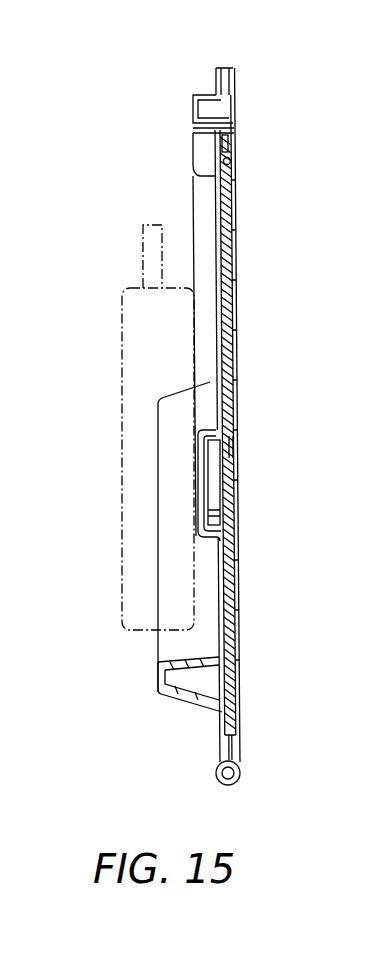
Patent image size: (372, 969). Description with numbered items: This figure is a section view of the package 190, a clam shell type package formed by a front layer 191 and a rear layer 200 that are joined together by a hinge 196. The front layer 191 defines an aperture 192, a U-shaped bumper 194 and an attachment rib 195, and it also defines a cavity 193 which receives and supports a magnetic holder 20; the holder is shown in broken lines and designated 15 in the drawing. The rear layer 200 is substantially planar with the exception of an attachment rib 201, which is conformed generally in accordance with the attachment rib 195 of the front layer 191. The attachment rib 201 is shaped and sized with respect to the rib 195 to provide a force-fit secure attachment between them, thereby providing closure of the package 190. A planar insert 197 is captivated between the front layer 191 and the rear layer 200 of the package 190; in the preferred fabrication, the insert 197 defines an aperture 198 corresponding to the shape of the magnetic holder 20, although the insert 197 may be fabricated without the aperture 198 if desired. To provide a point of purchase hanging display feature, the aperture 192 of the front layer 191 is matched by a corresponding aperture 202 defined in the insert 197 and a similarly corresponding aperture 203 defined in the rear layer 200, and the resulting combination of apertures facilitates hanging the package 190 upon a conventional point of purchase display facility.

The container 15 is at (120, 362).
The magnetic holder 20 is at (208, 482).
The package 190 is at (252, 337).
The front layer 191 is at (216, 82).
The aperture 192 is at (213, 163).
The cavity 193 is at (207, 543).
The U-shaped bumper 194 is at (160, 683).
The attachment rib 195 is at (193, 207).
The hinge 196 is at (236, 786).
The planar insert 197 is at (235, 128).
The aperture 198 is at (238, 457).
The rear layer 200 is at (238, 226).
The attachment rib 201 is at (233, 112).
The aperture 202 is at (233, 167).
The aperture 203 is at (236, 155).